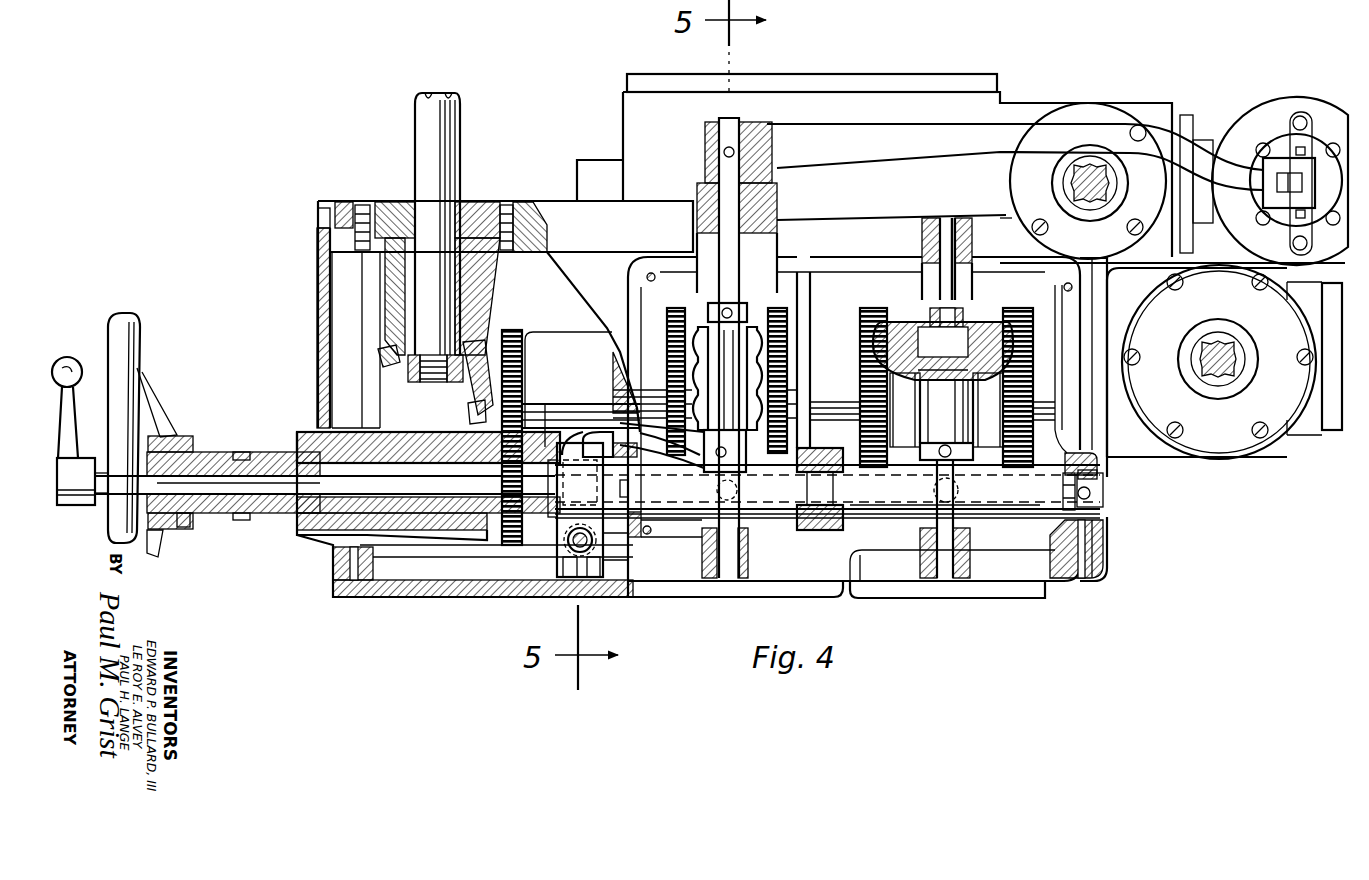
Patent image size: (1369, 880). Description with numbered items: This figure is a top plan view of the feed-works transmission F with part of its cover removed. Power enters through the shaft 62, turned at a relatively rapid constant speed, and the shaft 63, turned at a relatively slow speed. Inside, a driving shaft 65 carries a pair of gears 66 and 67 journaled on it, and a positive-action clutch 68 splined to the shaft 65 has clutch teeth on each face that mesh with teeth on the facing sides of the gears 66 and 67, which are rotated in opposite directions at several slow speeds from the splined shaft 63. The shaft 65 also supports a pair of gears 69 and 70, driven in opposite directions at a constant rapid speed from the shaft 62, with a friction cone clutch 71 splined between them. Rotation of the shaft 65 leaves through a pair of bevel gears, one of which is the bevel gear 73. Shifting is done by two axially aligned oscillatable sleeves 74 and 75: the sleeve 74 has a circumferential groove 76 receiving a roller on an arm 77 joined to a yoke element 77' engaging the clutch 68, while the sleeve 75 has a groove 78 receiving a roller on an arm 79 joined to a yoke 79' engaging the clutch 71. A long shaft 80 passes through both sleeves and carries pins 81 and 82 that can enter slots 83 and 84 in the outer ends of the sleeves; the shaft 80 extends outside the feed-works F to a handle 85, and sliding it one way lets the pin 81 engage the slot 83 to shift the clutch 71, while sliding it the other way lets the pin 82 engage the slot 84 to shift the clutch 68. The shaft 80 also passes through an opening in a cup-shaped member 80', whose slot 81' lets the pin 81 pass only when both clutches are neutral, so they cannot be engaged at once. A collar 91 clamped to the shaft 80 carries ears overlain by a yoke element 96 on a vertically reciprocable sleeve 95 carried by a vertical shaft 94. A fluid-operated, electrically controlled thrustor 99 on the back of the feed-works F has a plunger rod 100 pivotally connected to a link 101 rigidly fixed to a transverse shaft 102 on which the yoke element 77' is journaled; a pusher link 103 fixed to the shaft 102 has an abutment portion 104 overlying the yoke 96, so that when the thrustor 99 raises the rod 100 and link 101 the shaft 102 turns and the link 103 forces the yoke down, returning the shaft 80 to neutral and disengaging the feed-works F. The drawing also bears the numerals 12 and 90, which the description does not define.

The bevel gear 12 is at (474, 412).
The shaft 62 is at (1198, 349).
The shaft 63 is at (1072, 179).
The driving shaft 65 is at (497, 368).
The gear 66 is at (667, 378).
The gear 67 is at (783, 378).
The positive-action clutch 68 is at (702, 322).
The gear 69 is at (870, 320).
The gear 70 is at (1020, 320).
The friction cone clutch 71 is at (925, 322).
The bevel gear 73 is at (384, 355).
The oscillatable sleeve 74 is at (682, 512).
The oscillatable sleeve 75 is at (880, 513).
The circumferential groove 76 is at (748, 493).
The arm 77 is at (795, 499).
The yoke element 77' is at (740, 359).
The circumferential groove 78 is at (938, 506).
The arm 79 is at (967, 510).
The yoke 79' is at (964, 411).
The shaft 80 is at (618, 489).
The cup-shaped member 80' is at (1097, 548).
The pin 81 is at (1111, 488).
The slot 81' is at (1106, 467).
The pin 82 is at (611, 448).
The slot 83 is at (1063, 490).
The slot 84 is at (628, 489).
The handle 85 is at (70, 432).
The spindle 90 is at (462, 171).
The collar 91 is at (556, 513).
The vertically-disposed shaft 94 is at (560, 549).
The vertically-reciprocable sleeve 95 is at (620, 562).
The yoke element 96 is at (566, 542).
The thrustor 99 is at (1333, 133).
The rod 100 is at (1303, 186).
The link 101 is at (824, 136).
The shaft 102 is at (742, 125).
The pusher link 103 is at (660, 428).
The abutment portion 104 is at (574, 440).
The feed-works transmission F is at (1070, 592).